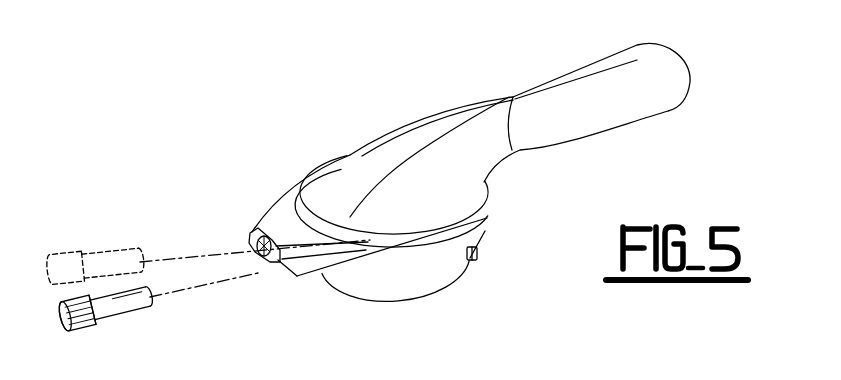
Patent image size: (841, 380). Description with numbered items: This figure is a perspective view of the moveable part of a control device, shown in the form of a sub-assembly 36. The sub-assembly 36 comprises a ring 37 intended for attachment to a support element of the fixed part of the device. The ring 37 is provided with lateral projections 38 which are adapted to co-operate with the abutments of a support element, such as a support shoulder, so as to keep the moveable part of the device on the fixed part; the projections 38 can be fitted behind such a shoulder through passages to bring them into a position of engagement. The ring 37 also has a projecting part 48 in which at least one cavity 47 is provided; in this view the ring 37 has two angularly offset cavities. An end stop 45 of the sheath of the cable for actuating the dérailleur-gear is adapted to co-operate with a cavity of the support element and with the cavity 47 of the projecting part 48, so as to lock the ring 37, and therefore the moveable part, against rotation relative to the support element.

The sub-assembly 36 is at (495, 88).
The ring 37 is at (445, 265).
The lateral projection 38 is at (478, 254).
The end stop 45 is at (108, 294).
The cavity 47 is at (286, 261).
The projecting part 48 is at (329, 263).